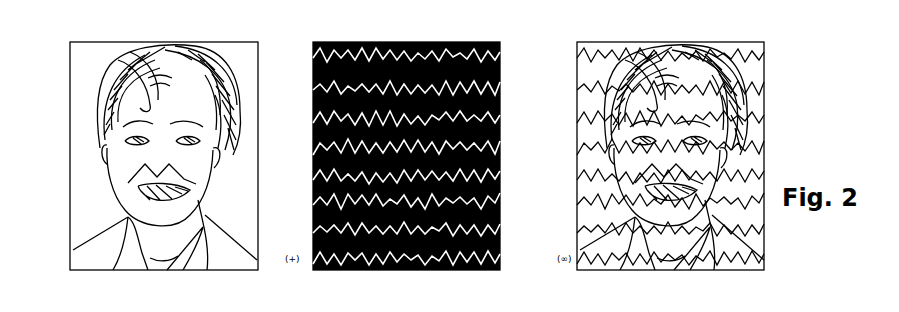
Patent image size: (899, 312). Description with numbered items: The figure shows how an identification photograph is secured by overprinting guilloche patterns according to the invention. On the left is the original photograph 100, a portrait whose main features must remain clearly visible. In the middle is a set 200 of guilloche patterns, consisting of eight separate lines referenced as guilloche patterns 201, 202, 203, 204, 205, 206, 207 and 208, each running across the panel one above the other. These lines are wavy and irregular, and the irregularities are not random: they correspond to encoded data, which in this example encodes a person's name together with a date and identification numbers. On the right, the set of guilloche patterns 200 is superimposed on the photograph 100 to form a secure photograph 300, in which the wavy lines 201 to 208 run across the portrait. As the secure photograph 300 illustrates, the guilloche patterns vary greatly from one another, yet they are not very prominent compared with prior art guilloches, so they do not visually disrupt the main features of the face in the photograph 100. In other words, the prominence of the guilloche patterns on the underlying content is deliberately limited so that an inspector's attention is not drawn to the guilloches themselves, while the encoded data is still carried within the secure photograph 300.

The photograph 100 is at (62, 62).
The set of guilloche patterns 200 is at (410, 155).
The guilloche pattern 201 is at (500, 60).
The guilloche pattern 202 is at (500, 96).
The guilloche pattern 203 is at (500, 120).
The guilloche pattern 204 is at (500, 150).
The guilloche pattern 205 is at (500, 180).
The guilloche pattern 206 is at (500, 204).
The guilloche pattern 207 is at (500, 232).
The guilloche pattern 208 is at (500, 263).
The secure photograph 300 is at (772, 74).